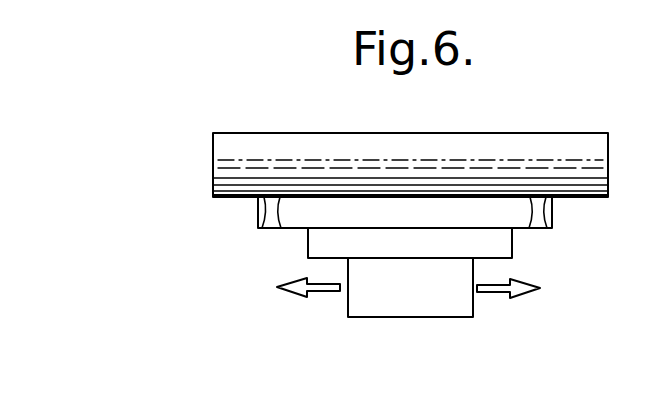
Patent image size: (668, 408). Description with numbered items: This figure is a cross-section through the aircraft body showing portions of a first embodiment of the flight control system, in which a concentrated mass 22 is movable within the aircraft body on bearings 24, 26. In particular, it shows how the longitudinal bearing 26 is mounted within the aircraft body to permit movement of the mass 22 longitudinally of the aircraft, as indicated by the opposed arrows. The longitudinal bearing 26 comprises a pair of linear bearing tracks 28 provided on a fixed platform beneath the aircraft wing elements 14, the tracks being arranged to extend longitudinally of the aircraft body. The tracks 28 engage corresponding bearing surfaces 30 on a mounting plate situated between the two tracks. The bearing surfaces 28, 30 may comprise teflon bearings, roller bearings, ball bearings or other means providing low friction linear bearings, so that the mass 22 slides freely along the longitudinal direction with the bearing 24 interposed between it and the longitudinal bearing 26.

The aircraft wing elements 14 is at (285, 147).
The concentrated mass 22 is at (371, 306).
The bearing 24 is at (503, 243).
The longitudinal bearing 26 is at (297, 218).
The linear bearing tracks 28 is at (261, 217).
The bearing surfaces 30 is at (546, 214).